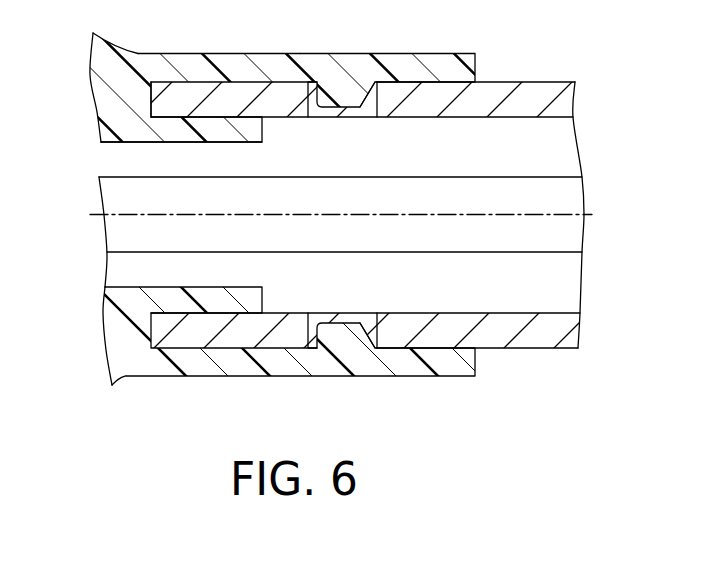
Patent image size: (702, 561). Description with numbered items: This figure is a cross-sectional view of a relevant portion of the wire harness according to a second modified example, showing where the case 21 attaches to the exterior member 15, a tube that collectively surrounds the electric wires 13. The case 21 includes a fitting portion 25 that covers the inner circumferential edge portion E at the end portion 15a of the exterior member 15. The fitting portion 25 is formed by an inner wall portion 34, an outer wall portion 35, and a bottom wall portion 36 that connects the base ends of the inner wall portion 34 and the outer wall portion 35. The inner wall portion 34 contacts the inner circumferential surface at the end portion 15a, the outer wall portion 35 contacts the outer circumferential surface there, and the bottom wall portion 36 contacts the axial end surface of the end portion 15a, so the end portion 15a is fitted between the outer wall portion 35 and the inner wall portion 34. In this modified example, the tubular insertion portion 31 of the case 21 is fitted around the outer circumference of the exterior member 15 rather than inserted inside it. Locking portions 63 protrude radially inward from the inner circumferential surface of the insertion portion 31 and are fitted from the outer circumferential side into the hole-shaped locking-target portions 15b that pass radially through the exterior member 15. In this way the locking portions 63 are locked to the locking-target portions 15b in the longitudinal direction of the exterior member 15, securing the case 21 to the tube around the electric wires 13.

The electric wire 13 is at (447, 177).
The exterior member 15 is at (532, 80).
The end portion 15a is at (235, 93).
The locking-target portion 15b is at (372, 98).
The case 21 is at (208, 377).
The fitting portion 25 is at (168, 142).
The insertion portion 31 is at (398, 63).
The inner wall portion 34 is at (212, 133).
The outer wall portion 35 is at (192, 58).
The bottom wall portion 36 is at (143, 93).
The locking portion 63 is at (343, 97).
The inner circumferential edge portion E is at (150, 118).